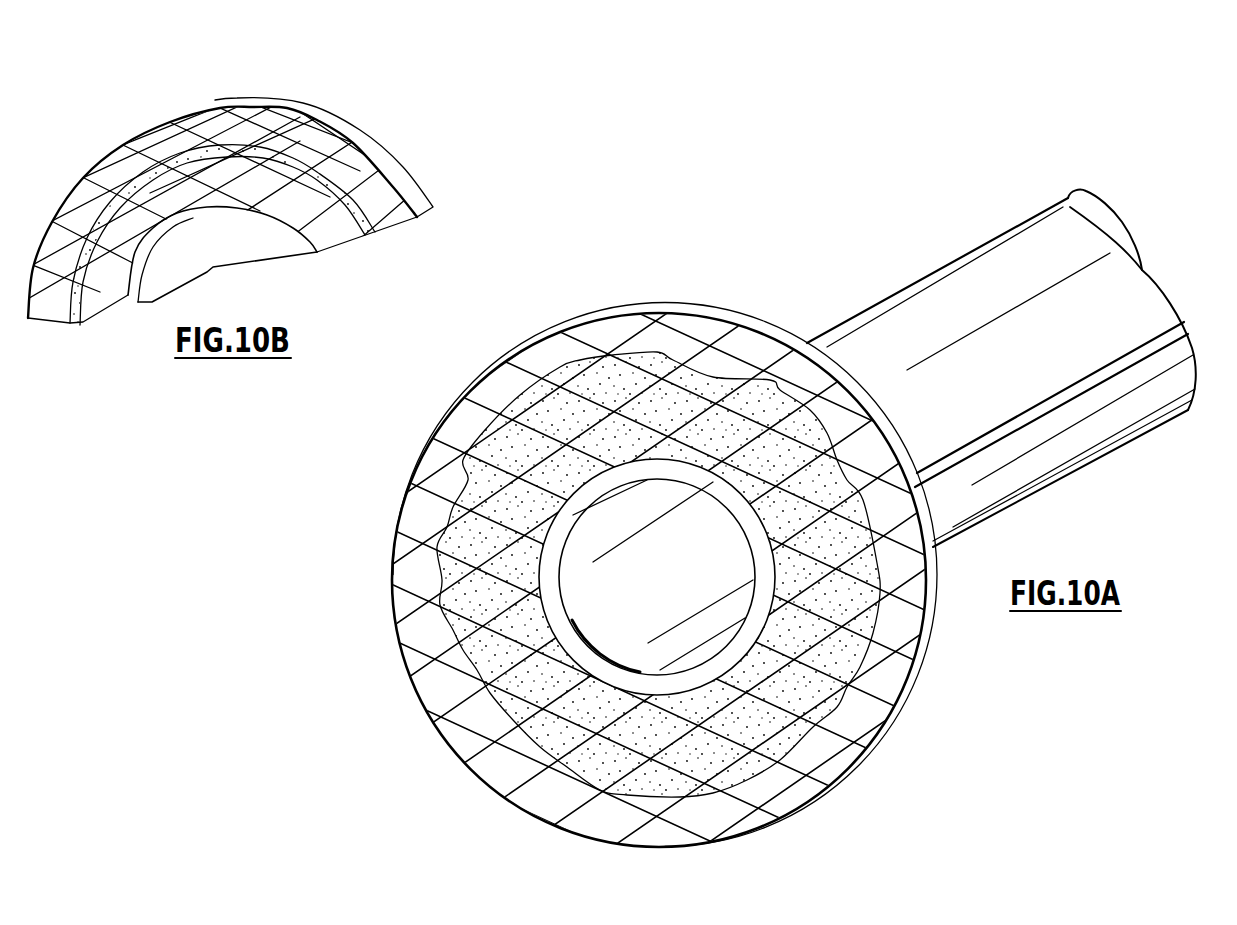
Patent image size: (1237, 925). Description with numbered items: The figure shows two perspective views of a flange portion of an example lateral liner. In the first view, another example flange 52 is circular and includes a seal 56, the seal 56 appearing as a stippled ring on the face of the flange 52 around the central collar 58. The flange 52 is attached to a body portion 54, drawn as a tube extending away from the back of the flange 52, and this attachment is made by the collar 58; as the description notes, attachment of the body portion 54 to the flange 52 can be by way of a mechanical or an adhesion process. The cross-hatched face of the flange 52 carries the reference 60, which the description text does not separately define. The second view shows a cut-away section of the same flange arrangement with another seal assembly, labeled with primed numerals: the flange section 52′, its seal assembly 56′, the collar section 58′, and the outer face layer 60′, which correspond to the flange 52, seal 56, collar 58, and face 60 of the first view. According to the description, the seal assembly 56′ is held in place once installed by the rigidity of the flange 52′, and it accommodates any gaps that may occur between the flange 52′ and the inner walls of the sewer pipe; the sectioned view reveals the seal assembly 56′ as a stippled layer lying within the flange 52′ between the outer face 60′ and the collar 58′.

In FIG. 10A, the flange 52 is at (731, 494).
In FIG. 10A, the body portion 54 is at (935, 292).
In FIG. 10A, the seal 56 is at (667, 380).
In FIG. 10A, the collar 58 is at (557, 612).
In FIG. 10A, the fabric outer layer 60 is at (505, 773).
In FIG. 10B, the polishing pad section 52′ is at (216, 176).
In FIG. 10B, the abrasive layer 56′ is at (293, 163).
In FIG. 10B, the central bore 58′ is at (193, 217).
In FIG. 10B, the fabric outer layer 60′ is at (220, 107).